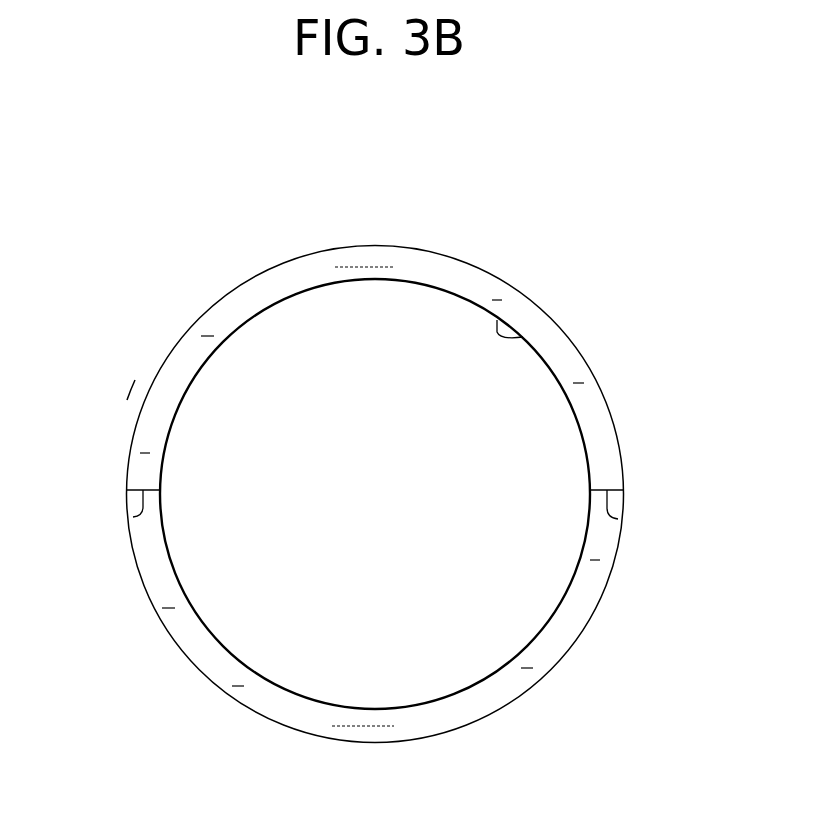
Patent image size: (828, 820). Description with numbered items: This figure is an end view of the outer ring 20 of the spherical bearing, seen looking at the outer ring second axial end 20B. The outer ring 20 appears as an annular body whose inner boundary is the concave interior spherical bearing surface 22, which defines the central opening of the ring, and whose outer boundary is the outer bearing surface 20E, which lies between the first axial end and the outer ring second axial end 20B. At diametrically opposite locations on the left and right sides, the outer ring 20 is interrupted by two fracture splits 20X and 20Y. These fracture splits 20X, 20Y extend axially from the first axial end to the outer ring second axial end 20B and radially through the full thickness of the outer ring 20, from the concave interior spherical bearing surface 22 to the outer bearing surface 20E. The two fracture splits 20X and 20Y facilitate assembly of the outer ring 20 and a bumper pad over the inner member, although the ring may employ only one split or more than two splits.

The outer ring 20 is at (577, 270).
The concave interior spherical bearing surface 22 is at (523, 337).
The outer ring second axial end 20B is at (150, 440).
The fracture split 20X is at (133, 517).
The fracture split 20Y is at (618, 519).
The outer bearing surface 20E is at (560, 663).